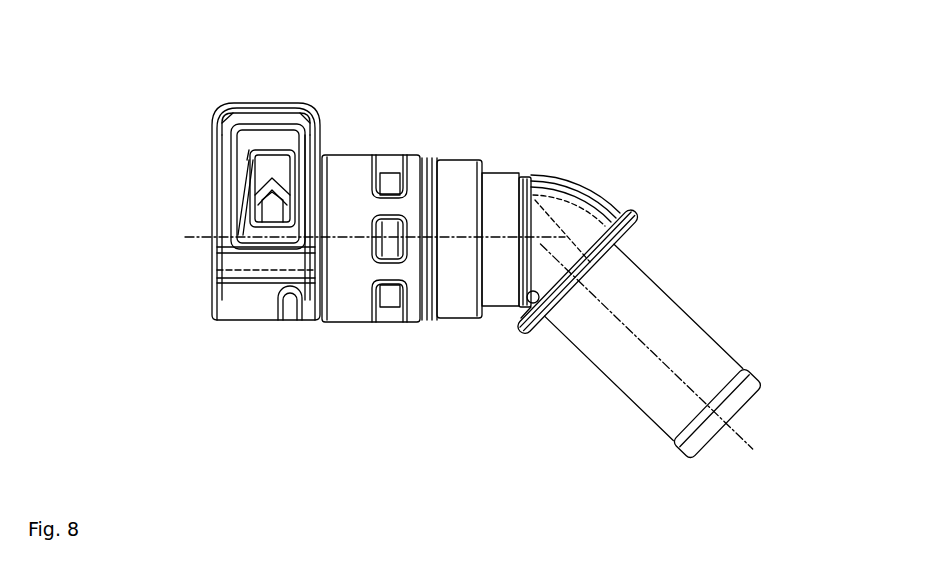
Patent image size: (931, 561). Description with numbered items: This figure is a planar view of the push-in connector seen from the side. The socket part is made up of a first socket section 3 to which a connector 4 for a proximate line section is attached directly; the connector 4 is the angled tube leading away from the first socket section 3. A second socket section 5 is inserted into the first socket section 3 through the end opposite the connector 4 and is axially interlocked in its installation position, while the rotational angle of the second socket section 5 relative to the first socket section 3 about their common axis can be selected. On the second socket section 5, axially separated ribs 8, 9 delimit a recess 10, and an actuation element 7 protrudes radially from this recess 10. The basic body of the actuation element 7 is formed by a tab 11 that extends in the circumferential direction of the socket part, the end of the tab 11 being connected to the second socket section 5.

The first socket section 3 is at (456, 178).
The connector 4 is at (668, 318).
The second socket section 5 is at (245, 320).
The actuation element 7 is at (281, 245).
The rib 8 is at (208, 134).
The rib 9 is at (326, 136).
The recess 10 is at (391, 155).
The tab 11 is at (270, 160).